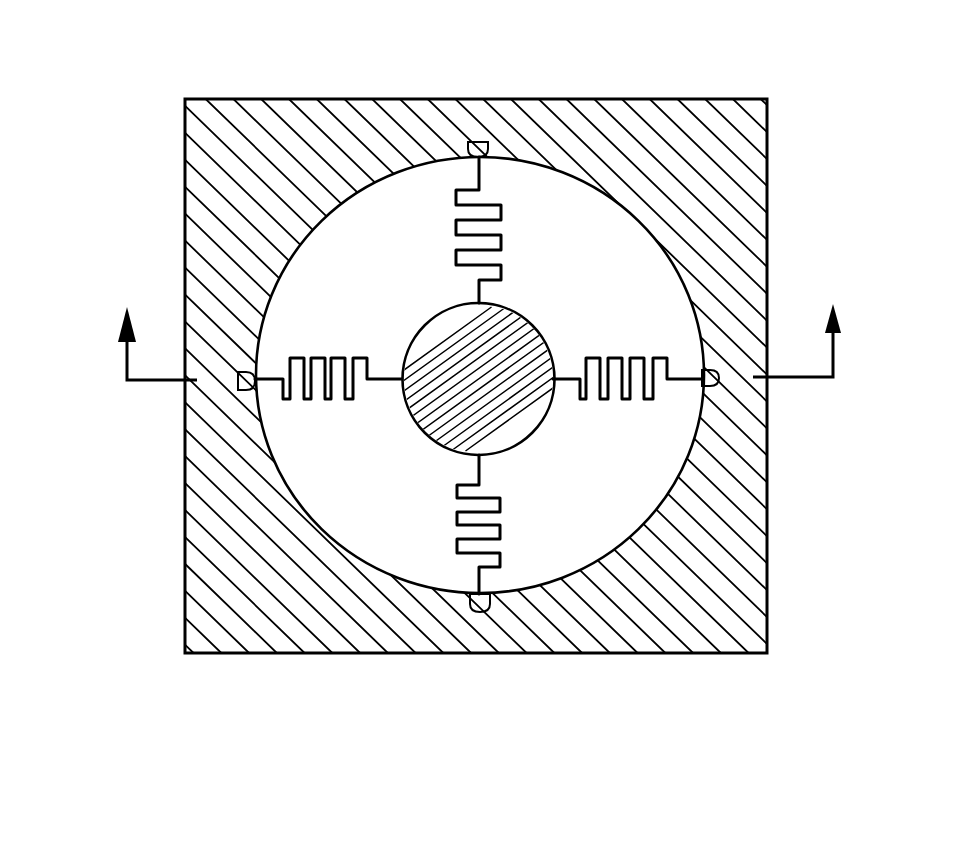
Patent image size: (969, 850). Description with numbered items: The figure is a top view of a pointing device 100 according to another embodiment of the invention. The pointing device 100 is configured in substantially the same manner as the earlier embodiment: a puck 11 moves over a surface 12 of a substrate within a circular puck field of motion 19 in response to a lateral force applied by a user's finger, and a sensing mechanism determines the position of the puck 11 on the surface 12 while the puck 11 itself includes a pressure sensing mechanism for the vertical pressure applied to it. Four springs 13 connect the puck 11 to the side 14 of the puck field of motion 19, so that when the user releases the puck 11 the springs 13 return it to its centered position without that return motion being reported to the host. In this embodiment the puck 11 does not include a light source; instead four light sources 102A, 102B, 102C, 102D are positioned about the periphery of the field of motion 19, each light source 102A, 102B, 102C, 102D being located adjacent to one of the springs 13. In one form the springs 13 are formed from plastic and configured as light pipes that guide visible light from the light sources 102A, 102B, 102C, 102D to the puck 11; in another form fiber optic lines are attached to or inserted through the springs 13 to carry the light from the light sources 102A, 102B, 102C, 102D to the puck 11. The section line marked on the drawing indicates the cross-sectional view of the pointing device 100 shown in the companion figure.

The pointing device 100 is at (112, 88).
The puck 11 is at (520, 337).
The surface 12 is at (590, 523).
The springs 13 is at (650, 398).
The side 14 is at (752, 522).
The puck field of motion 19 is at (628, 258).
The light source 102A is at (488, 151).
The light source 102B is at (708, 388).
The light source 102C is at (492, 603).
The light source 102D is at (241, 373).